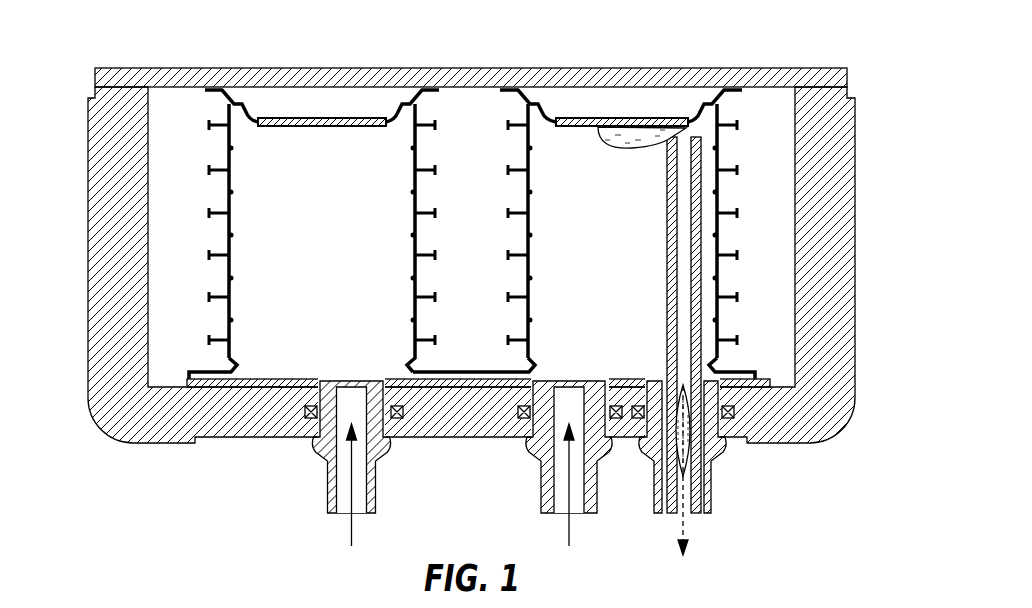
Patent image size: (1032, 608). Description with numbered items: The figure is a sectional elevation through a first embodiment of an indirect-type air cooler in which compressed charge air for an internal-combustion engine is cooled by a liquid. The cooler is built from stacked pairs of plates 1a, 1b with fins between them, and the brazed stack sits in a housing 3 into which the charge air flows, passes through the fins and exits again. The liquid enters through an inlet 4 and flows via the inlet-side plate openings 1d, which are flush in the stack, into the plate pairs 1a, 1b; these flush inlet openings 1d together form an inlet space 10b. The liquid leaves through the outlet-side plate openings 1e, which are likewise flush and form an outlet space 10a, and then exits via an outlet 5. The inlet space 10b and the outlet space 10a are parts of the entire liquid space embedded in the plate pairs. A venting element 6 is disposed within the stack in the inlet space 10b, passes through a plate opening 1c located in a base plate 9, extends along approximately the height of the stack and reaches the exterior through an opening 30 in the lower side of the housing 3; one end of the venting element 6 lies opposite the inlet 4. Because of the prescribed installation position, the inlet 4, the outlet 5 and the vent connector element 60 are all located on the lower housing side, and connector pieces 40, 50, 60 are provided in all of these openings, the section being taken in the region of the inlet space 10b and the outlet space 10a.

The housing 3 is at (764, 68).
The base plate 9 is at (457, 388).
The outlet space 10a is at (237, 251).
The inlet space 10b is at (631, 266).
The plate pair 1a is at (225, 270).
The plate pair 1b is at (226, 288).
The plate opening 1c is at (713, 375).
The inlet-side plate opening 1d is at (520, 345).
The outlet-side plate opening 1e is at (230, 337).
The inlet 4 is at (557, 368).
The outlet 5 is at (303, 418).
The venting element 6 is at (716, 350).
The opening 30 is at (633, 437).
The connector piece 40 is at (590, 463).
The connector piece 50 is at (322, 455).
The connector element 60 is at (717, 453).